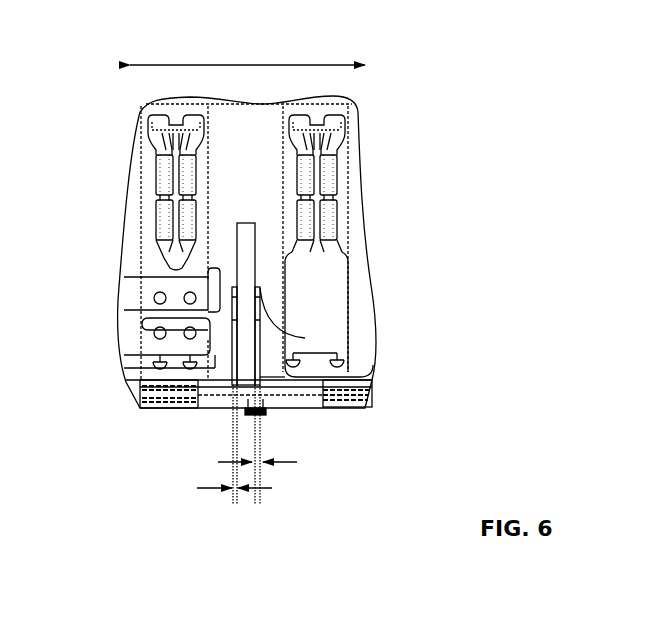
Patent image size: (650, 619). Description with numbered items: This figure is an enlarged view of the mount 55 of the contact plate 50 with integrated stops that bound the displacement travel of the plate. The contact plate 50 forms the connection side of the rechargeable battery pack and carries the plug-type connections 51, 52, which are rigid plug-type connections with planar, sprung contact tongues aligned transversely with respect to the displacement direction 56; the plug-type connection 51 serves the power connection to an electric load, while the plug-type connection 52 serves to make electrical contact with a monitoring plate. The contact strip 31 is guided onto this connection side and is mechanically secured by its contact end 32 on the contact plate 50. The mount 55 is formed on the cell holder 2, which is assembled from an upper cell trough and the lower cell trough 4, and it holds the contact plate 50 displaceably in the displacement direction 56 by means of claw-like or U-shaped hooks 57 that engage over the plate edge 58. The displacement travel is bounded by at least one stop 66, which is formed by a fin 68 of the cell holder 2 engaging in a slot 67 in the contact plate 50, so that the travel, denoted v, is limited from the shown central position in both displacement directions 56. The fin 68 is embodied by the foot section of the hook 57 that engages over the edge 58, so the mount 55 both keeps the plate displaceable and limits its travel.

The cell holder 2 is at (345, 405).
The second, lower cell trough 4 is at (220, 395).
The contact strip 31 is at (118, 307).
The contact end 32 is at (175, 338).
The contact plate 50 is at (244, 152).
The plug-type connection 51 is at (168, 173).
The plug-type connection 52 is at (327, 173).
The mount 55 is at (222, 247).
The displacement direction 56 is at (211, 62).
The hook 57 is at (250, 263).
The plate edge 58 is at (313, 338).
The stop 66 is at (228, 325).
The slot 67 is at (235, 300).
The fin 68 is at (253, 348).